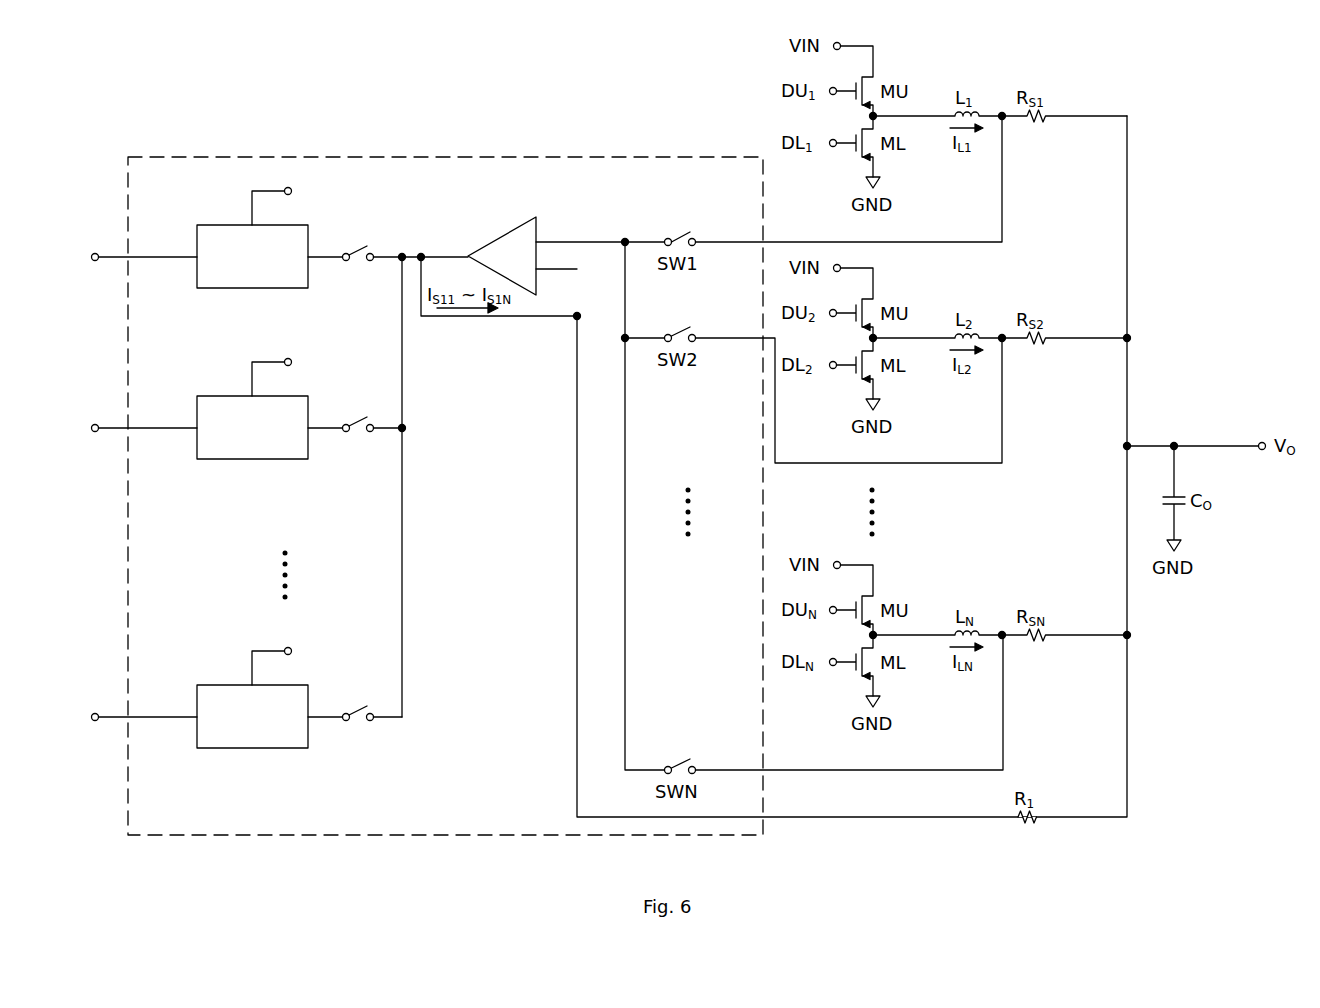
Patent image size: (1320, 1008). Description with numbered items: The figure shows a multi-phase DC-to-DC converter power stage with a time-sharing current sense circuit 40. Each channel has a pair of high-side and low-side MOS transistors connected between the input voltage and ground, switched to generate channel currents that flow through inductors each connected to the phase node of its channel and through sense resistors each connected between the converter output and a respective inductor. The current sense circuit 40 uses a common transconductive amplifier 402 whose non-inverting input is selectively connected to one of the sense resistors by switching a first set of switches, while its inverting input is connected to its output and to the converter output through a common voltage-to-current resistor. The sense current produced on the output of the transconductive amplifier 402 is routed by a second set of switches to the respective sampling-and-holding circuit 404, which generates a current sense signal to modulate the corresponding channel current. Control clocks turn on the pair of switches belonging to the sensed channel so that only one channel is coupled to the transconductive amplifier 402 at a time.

The current sense circuit 40 is at (504, 156).
The transconductive amplifier 402 is at (506, 236).
The sampling-and-holding circuit 404 is at (266, 288).